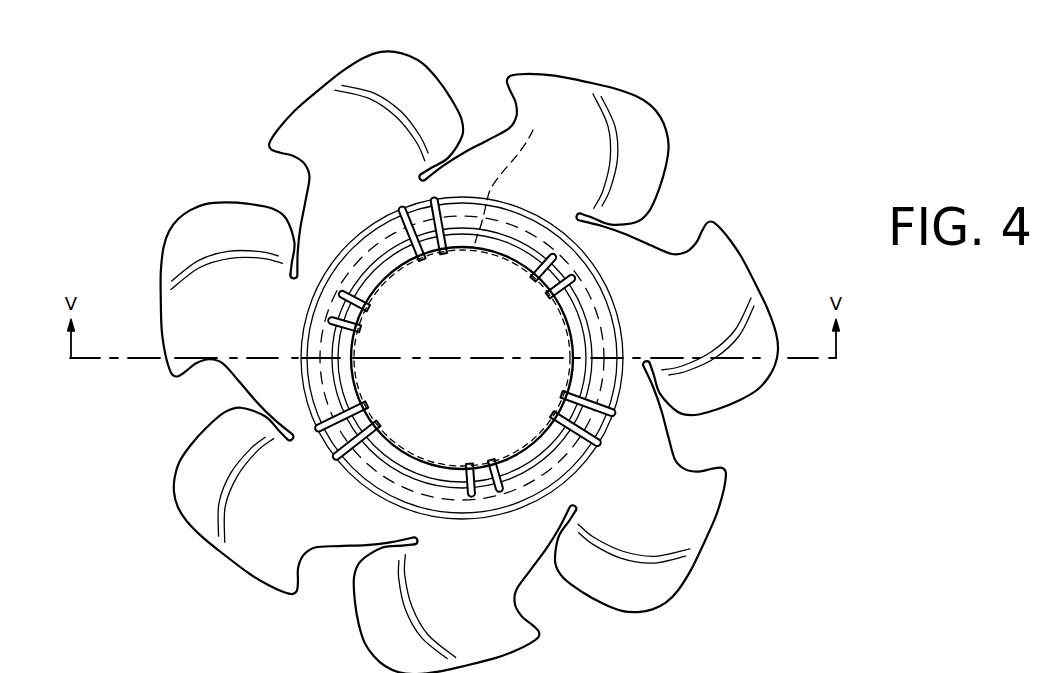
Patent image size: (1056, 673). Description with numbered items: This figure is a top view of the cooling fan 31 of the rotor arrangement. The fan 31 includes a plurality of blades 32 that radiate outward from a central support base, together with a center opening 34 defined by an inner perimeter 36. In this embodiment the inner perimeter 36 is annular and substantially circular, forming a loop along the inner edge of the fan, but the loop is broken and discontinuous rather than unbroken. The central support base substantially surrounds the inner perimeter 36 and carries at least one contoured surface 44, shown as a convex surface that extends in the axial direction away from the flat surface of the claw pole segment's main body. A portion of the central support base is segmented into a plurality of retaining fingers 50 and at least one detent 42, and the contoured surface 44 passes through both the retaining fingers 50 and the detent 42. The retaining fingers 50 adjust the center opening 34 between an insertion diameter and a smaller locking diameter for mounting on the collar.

The fan 31 is at (444, 346).
The blades 32 is at (637, 150).
The center opening 34 is at (437, 390).
The inner perimeter 36 is at (293, 194).
The detent 42 is at (500, 480).
The contoured surface 44 is at (544, 237).
The retaining fingers 50 is at (600, 418).